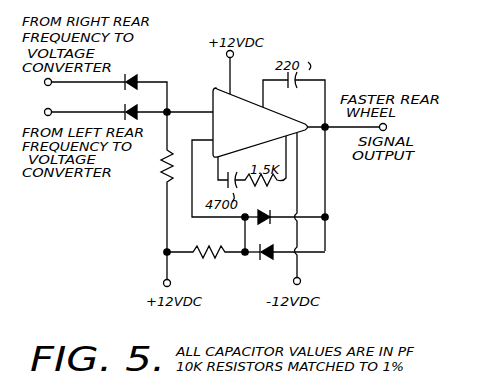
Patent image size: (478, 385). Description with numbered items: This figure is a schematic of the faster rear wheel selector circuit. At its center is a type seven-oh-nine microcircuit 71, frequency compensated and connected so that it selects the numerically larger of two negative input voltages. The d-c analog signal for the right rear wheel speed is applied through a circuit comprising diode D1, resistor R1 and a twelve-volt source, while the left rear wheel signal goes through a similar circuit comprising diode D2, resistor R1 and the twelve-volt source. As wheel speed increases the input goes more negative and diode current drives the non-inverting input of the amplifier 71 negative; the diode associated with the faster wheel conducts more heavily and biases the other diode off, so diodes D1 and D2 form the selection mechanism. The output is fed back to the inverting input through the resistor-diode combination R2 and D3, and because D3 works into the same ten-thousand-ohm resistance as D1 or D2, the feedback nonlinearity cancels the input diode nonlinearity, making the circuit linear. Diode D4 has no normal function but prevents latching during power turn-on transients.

The diode D1 is at (139, 72).
The diode D2 is at (137, 104).
The diode D3 is at (262, 212).
The diode D4 is at (262, 247).
The resistor R1 is at (154, 182).
The resistor R2 is at (206, 250).
The microcircuit 71 is at (282, 114).